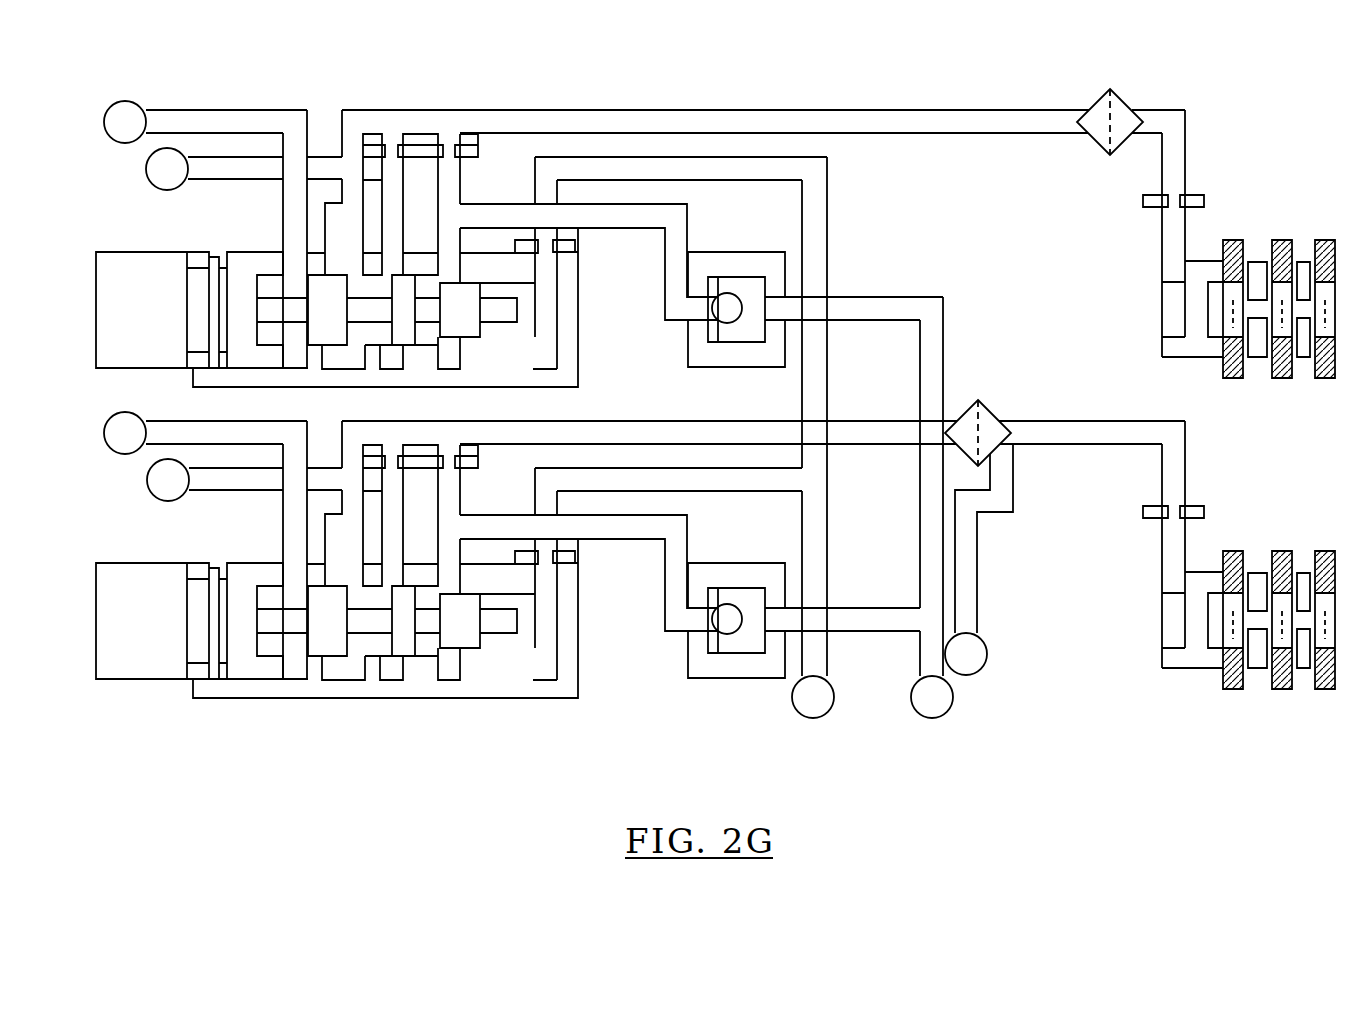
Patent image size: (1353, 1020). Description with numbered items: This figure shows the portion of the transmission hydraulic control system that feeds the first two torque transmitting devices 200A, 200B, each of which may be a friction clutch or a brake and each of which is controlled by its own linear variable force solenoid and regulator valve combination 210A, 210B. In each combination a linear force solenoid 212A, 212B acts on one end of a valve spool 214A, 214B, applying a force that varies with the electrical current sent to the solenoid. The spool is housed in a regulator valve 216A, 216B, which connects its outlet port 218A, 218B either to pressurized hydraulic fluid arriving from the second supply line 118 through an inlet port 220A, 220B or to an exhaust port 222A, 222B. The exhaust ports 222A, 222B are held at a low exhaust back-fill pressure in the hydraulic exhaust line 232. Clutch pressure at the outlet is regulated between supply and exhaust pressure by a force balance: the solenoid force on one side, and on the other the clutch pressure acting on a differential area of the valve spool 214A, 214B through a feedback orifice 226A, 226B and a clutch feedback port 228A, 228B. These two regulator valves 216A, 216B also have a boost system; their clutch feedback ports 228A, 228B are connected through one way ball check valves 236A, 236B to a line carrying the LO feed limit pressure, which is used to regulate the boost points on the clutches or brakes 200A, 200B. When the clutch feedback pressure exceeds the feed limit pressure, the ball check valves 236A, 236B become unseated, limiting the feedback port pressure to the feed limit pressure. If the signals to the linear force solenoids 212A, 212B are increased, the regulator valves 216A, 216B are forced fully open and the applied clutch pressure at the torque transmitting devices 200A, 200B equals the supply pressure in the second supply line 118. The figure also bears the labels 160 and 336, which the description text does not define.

The second supply line 118 is at (262, 122).
The hydraulic exhaust line 232 is at (207, 168).
The hydraulic control system 160 is at (692, 417).
The linear force solenoid 212A is at (163, 332).
The linear force solenoid 212B is at (163, 643).
The inlet port 220A is at (295, 252).
The inlet port 220B is at (295, 563).
The exhaust port 222A is at (393, 255).
The exhaust port 222B is at (393, 566).
The outlet port 218A is at (352, 197).
The outlet port 218B is at (352, 452).
The feedback orifice 226A is at (478, 152).
The feedback orifice 226B is at (468, 463).
The clutch feedback port 228A is at (455, 250).
The clutch feedback port 228B is at (448, 580).
The valve spool 214A is at (507, 310).
The valve spool 214B is at (507, 620).
The regulator valve 216A is at (588, 298).
The regulator valve 216B is at (588, 608).
The linear variable force solenoid and regulator valve combination 210A is at (588, 372).
The linear variable force solenoid and regulator valve combination 210B is at (588, 682).
The one way ball check valve 236A is at (748, 293).
The one way ball check valve 236B is at (748, 604).
The torque transmitting device 200A is at (1272, 224).
The torque transmitting device 200B is at (1272, 535).
The fluid line 336 is at (968, 552).